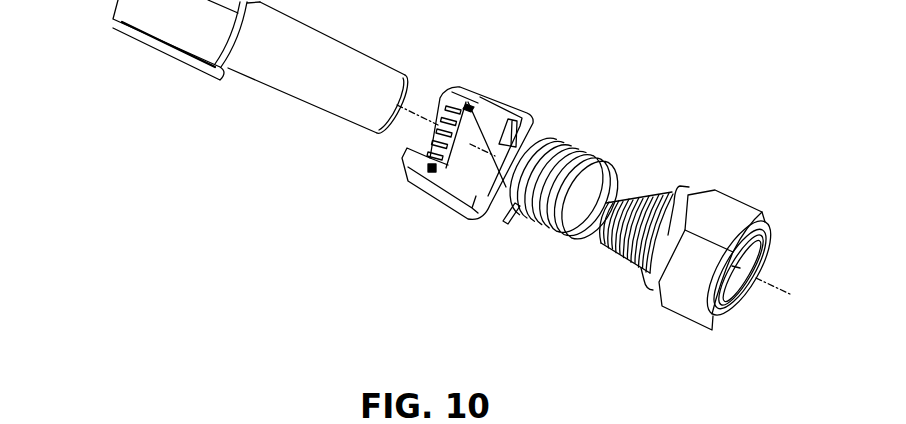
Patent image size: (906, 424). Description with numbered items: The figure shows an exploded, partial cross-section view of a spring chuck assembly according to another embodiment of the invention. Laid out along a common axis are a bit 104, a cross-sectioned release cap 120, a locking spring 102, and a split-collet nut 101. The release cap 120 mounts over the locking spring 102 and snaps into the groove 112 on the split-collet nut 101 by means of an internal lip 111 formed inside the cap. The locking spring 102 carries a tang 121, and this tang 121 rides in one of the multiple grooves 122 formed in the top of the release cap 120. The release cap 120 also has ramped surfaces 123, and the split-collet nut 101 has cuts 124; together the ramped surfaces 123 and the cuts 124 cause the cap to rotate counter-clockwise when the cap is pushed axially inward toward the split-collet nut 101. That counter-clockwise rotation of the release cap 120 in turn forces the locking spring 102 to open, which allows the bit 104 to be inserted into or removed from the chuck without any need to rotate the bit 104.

The split-collet nut 101 is at (753, 202).
The locking spring 102 is at (557, 240).
The bit 104 is at (157, 57).
The internal lip 111 is at (470, 106).
The groove 112 is at (703, 190).
The release cap 120 is at (432, 209).
The tang 121 is at (503, 228).
The grooves 122 is at (422, 153).
The ramped surfaces 123 is at (518, 120).
The cuts 124 is at (635, 293).